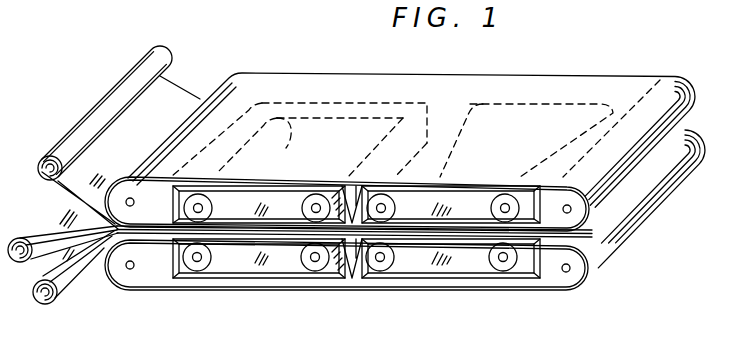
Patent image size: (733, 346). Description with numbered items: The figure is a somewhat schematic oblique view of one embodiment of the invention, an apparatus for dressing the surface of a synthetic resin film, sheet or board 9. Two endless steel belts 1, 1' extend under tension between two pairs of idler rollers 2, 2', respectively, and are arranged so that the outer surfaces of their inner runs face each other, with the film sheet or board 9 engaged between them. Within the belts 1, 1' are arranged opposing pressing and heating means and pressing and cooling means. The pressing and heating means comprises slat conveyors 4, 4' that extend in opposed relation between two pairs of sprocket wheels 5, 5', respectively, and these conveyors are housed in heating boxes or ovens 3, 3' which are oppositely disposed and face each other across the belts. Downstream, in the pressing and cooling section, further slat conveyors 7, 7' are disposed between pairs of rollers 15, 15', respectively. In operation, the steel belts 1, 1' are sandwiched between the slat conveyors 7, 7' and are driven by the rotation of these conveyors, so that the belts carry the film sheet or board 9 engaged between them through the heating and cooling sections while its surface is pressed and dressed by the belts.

The endless steel belt 1 is at (411, 129).
The endless steel belt 1' is at (550, 226).
The idler roller 2 is at (388, 191).
The idler roller 2' is at (357, 291).
The heating box or oven 3 is at (347, 182).
The heating box or oven 3' is at (346, 281).
The slat conveyor 4 is at (267, 186).
The slat conveyor 4' is at (267, 280).
The sprocket wheel 5 is at (257, 208).
The sprocket wheel 5' is at (256, 257).
The slat conveyor 7 is at (451, 189).
The slat conveyor 7' is at (451, 280).
The roller 15 is at (443, 208).
The roller 15' is at (441, 257).
The synthetic resin film sheet or board 9 is at (57, 223).